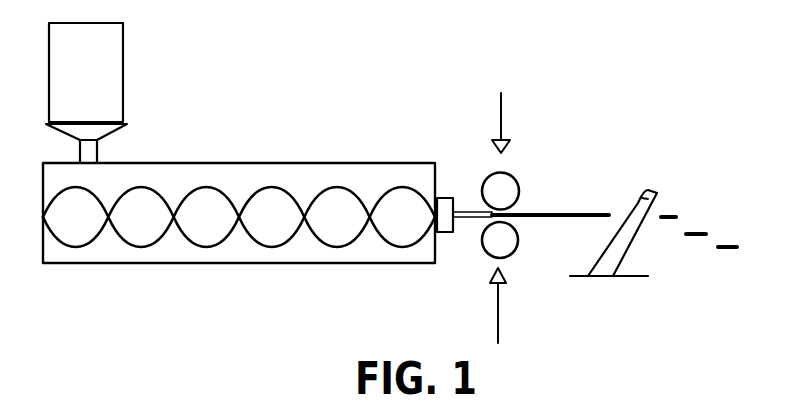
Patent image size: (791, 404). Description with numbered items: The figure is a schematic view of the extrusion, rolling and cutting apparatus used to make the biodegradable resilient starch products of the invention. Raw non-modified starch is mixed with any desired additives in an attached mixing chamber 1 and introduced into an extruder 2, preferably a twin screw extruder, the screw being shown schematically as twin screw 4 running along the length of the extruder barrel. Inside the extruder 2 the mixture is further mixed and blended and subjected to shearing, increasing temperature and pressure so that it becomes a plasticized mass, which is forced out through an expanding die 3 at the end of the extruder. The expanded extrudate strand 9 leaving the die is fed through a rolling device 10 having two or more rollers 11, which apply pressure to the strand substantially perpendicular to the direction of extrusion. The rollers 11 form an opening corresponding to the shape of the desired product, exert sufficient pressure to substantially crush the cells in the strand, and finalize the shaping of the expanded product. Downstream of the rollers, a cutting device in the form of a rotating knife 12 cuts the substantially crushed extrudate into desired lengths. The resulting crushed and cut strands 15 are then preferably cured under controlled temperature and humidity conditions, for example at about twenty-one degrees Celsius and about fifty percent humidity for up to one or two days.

The mixing chamber 1 is at (98, 77).
The extruder 2 is at (227, 180).
The expanding die 3 is at (442, 205).
The twin screw 4 is at (210, 227).
The extrudate strand 9 is at (563, 213).
The rolling device 10 is at (515, 218).
The rollers 11 is at (507, 180).
The rotating knife 12 is at (645, 197).
The crushed and cut strands 15 is at (731, 240).